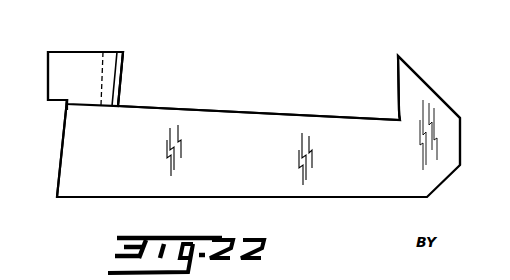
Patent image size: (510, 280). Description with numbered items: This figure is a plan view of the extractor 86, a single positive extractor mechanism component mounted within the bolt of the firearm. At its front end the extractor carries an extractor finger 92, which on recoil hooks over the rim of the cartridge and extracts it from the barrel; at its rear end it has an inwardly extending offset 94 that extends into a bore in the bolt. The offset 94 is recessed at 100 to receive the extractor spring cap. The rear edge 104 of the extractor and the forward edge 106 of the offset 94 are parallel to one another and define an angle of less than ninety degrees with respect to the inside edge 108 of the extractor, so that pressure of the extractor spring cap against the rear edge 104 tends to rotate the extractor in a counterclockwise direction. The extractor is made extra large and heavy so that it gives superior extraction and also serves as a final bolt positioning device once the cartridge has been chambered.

The extractor 86 is at (275, 165).
The extractor finger 92 is at (452, 73).
The inwardly extending offset 94 is at (84, 56).
The recess 100 is at (54, 104).
The rear edge 104 is at (60, 142).
The forward edge 106 is at (120, 71).
The inside edge 108 is at (226, 111).